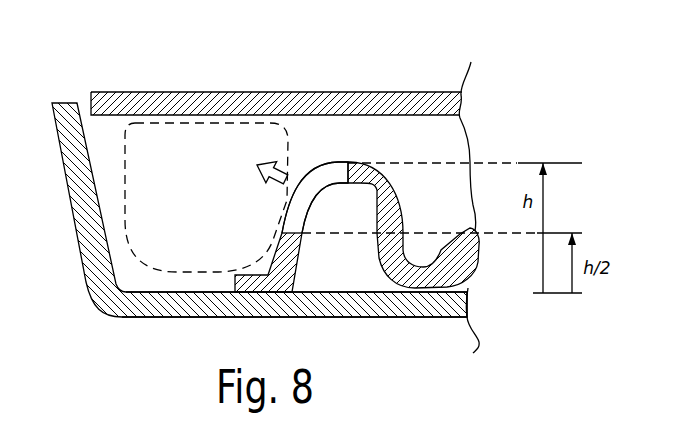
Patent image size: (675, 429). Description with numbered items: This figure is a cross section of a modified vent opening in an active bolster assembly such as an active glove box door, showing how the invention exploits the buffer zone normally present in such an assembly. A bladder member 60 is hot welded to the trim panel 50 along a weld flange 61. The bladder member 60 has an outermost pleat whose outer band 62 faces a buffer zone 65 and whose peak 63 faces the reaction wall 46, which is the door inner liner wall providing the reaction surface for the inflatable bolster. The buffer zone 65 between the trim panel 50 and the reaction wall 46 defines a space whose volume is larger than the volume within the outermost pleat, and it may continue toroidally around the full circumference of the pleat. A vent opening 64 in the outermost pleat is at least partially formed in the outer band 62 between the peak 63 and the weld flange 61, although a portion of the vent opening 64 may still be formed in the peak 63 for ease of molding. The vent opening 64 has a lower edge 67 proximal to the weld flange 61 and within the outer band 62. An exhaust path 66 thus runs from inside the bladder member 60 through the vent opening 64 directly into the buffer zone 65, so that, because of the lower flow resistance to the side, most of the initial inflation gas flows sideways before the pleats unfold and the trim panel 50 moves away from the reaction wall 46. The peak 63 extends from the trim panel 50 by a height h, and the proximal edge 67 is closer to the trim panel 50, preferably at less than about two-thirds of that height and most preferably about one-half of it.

The door inner liner wall 46 is at (159, 103).
The trim panel 50 is at (128, 306).
The bladder member 60 is at (359, 179).
The weld flange 61 is at (257, 289).
The outer band 62 is at (290, 258).
The peak 63 is at (348, 162).
The vent opening 64 is at (330, 172).
The buffer zone 65 is at (188, 196).
The exhaust path 66 is at (263, 158).
The lower edge 67 is at (283, 232).